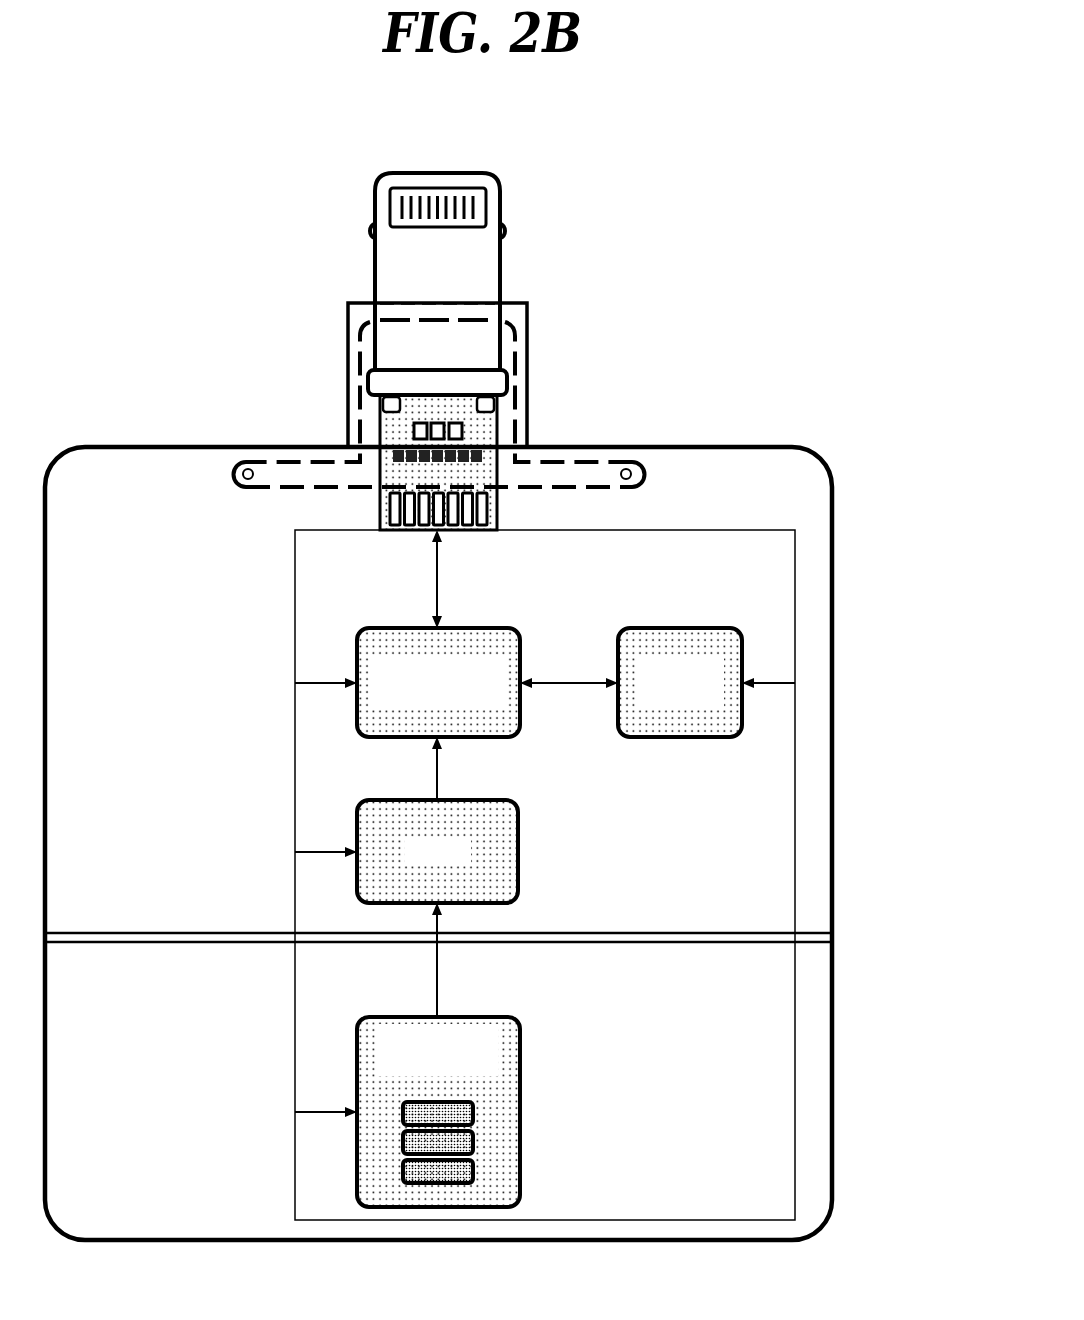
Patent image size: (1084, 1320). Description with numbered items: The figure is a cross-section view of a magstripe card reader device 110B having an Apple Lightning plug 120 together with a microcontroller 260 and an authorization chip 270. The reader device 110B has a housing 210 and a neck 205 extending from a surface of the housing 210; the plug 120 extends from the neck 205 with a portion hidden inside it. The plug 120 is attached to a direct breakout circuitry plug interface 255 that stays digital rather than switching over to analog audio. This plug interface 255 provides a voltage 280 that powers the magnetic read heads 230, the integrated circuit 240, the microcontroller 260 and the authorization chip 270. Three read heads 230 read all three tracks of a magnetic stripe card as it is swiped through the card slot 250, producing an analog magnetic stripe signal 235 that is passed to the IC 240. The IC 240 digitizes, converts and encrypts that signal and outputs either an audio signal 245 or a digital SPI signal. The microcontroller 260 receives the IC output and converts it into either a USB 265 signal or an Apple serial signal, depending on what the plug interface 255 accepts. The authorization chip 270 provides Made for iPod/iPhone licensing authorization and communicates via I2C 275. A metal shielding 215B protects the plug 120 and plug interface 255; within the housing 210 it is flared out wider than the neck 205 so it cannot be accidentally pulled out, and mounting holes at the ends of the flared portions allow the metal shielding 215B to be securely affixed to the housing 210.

The reader device 110B is at (847, 1238).
The Apple Lightning plug 120 is at (316, 292).
The neck 205 is at (571, 307).
The housing 210 is at (874, 1238).
The metal shielding 215B is at (226, 472).
The magnetic read heads 230 is at (481, 1073).
The analog magnetic stripe signal 235 is at (528, 995).
The integrated circuit 240 is at (465, 860).
The audio signal 245 is at (578, 781).
The card slot 250 is at (183, 1109).
The direct breakout circuitry plug interface 255 is at (505, 536).
The microcontroller 260 is at (423, 703).
The Universal Serial Bus signal 265 is at (515, 606).
The authorization chip 270 is at (665, 705).
The Inter-Integrated Circuit 275 is at (598, 678).
The voltage 280 is at (257, 799).